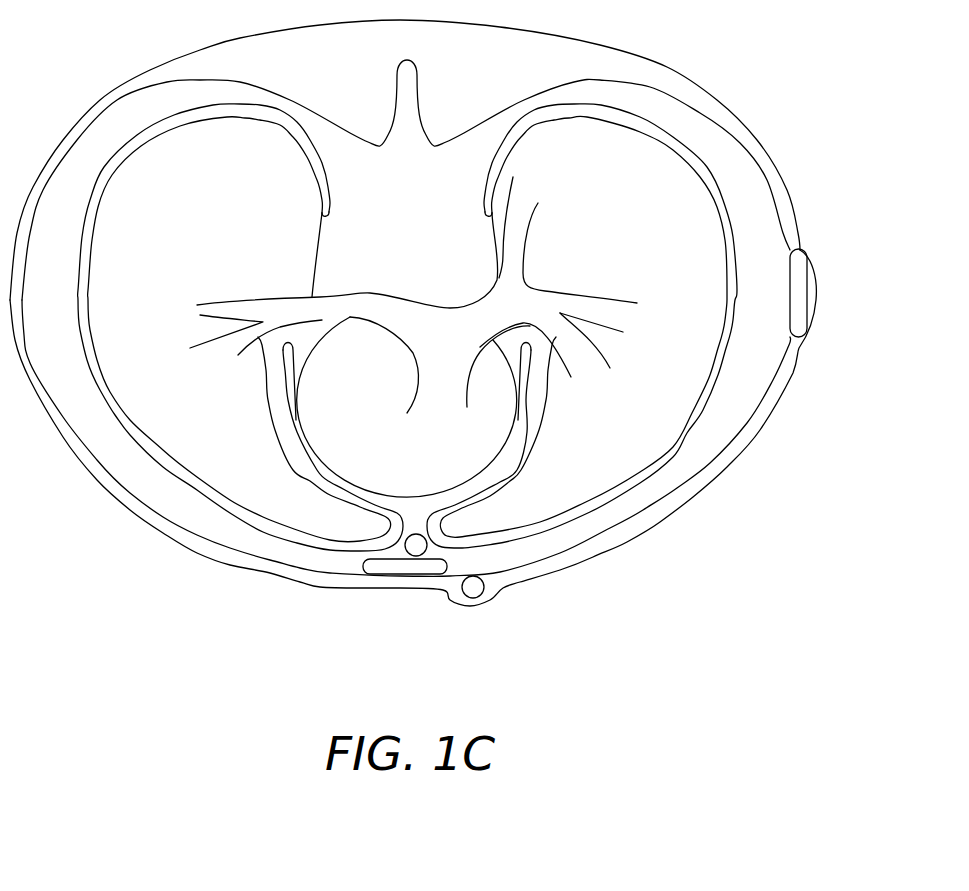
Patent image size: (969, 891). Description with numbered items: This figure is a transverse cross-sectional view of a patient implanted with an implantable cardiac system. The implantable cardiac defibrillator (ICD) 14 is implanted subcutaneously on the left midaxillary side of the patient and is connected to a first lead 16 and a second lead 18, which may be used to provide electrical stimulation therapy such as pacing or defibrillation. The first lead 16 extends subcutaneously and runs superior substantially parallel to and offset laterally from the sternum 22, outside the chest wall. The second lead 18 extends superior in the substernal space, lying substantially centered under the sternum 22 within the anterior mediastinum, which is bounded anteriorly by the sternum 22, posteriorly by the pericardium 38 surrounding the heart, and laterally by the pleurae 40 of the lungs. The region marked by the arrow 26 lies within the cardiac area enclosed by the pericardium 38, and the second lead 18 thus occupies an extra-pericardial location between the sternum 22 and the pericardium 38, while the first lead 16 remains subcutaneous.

The implantable cardiac defibrillator 14 is at (806, 300).
The first lead 16 is at (480, 590).
The second lead 18 is at (418, 547).
The sternum 22 is at (372, 569).
The heart 26 is at (380, 333).
The pericardium 38 is at (383, 492).
The pleurae 40 is at (225, 512).